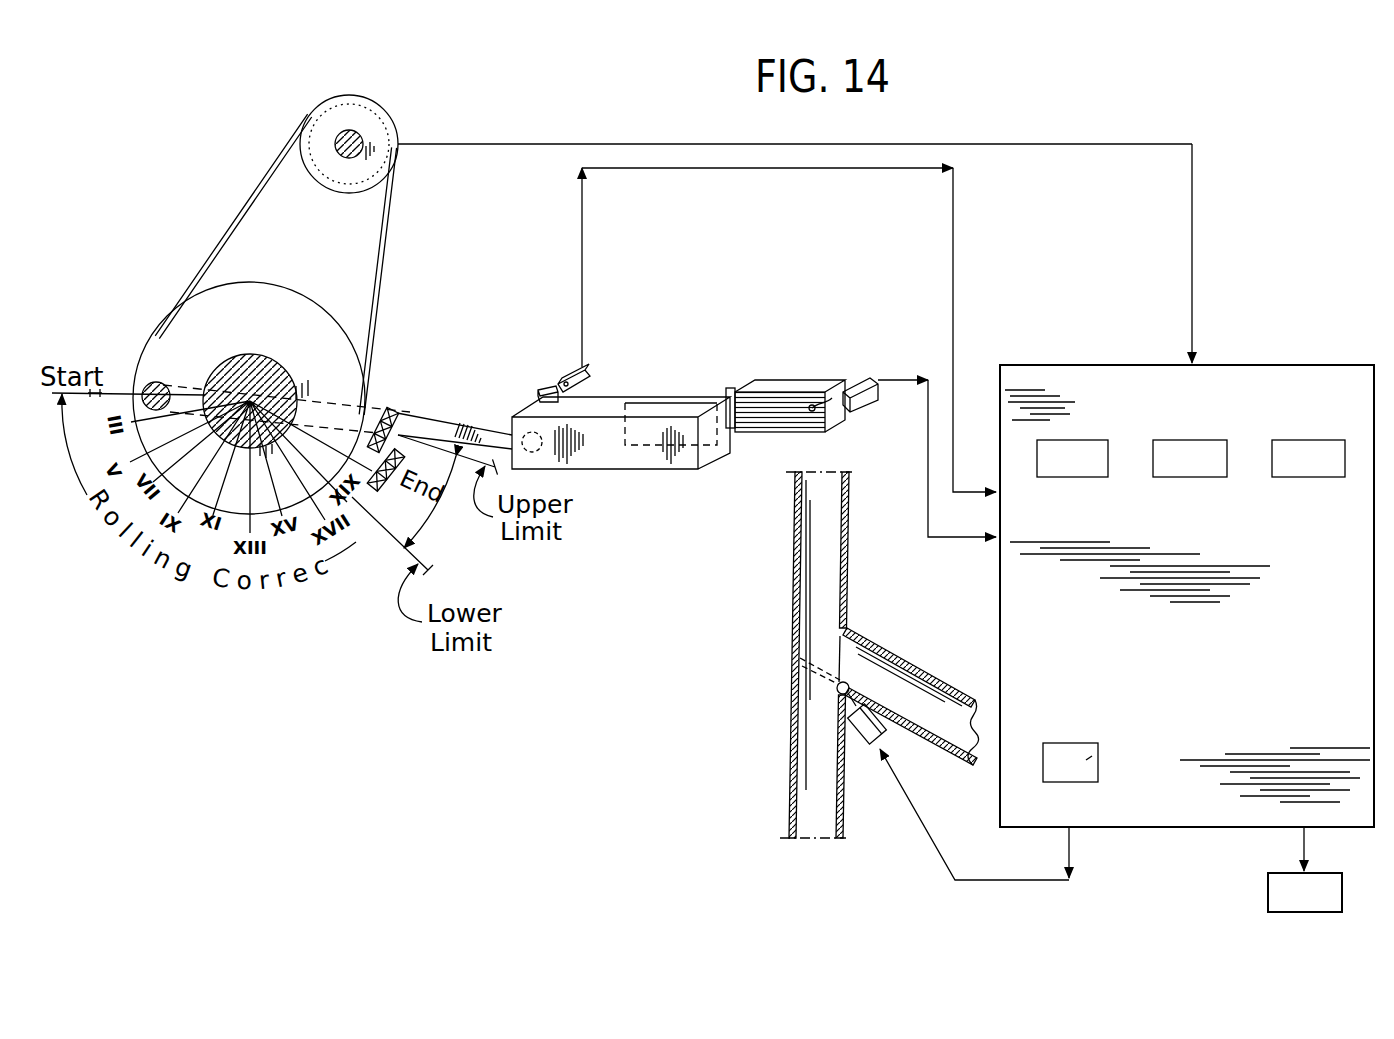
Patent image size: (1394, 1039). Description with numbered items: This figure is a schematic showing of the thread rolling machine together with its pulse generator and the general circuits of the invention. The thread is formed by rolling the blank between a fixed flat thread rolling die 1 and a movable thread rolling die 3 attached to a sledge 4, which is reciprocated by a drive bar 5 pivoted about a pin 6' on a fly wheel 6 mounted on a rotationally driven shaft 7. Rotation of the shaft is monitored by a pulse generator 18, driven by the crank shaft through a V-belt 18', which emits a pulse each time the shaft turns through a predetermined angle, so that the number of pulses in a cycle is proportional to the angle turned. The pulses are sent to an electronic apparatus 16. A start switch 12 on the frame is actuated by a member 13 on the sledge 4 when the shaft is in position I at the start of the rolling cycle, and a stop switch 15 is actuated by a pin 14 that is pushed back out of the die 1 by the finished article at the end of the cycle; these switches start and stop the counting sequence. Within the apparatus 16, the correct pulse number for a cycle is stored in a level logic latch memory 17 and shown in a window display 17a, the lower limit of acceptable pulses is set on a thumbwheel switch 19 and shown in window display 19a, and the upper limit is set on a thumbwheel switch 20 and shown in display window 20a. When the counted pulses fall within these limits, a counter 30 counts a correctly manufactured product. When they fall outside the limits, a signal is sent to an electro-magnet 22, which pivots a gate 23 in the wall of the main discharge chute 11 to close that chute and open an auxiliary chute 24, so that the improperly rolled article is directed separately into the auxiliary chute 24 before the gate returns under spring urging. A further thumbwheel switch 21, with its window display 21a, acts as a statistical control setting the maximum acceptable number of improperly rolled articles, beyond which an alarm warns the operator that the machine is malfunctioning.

The flat thread rolling die 1 is at (762, 382).
The movable thread rolling die 3 is at (696, 378).
The sledge 4 is at (646, 470).
The drive bar 5 is at (442, 418).
The fly wheel 6 is at (249, 378).
The pin 6' is at (168, 372).
The shaft 7 is at (268, 362).
The main discharge chute 11 is at (796, 606).
The start switch 12 is at (574, 370).
The actuating member 13 is at (540, 388).
The pin 14 is at (812, 404).
The stop switch 15 is at (876, 378).
The electronic apparatus 16 is at (1276, 362).
The level logic latch memory 17 is at (1198, 480).
The window display 17a is at (1192, 440).
The pulse generator 18 is at (369, 127).
The V-belt 18' is at (275, 264).
The thumbwheel switch 19 is at (1070, 480).
The window display 19a is at (1082, 440).
The thumbwheel switch 20 is at (1308, 480).
The display window 20a is at (1307, 440).
The thumbwheel switch 21 is at (1069, 742).
The window display 21a is at (1086, 760).
The electro-magnet 22 is at (882, 742).
The gate 23 is at (845, 650).
The auxiliary chute 24 is at (924, 684).
The counter 30 is at (1268, 893).